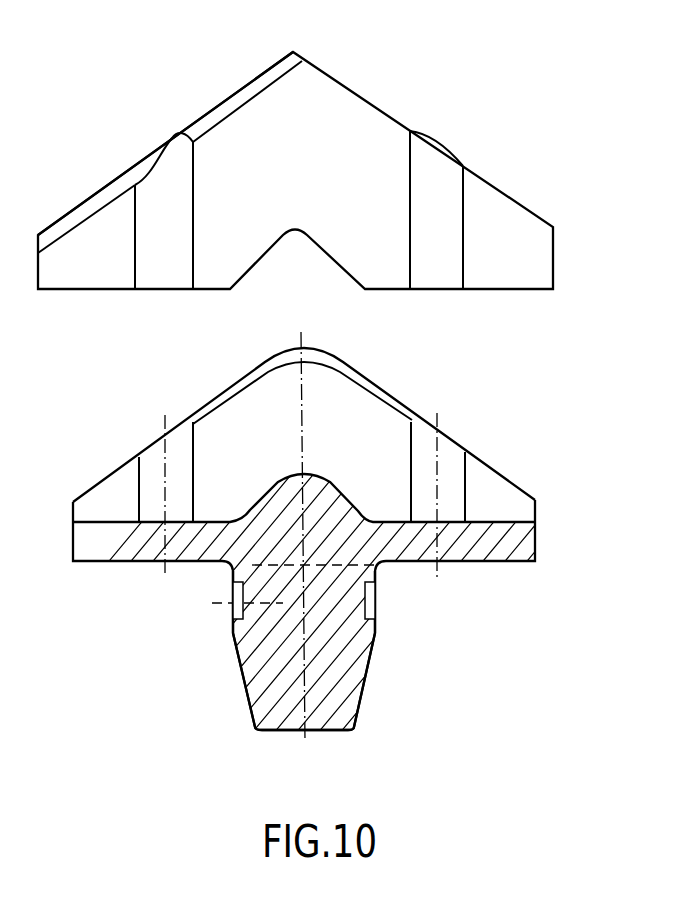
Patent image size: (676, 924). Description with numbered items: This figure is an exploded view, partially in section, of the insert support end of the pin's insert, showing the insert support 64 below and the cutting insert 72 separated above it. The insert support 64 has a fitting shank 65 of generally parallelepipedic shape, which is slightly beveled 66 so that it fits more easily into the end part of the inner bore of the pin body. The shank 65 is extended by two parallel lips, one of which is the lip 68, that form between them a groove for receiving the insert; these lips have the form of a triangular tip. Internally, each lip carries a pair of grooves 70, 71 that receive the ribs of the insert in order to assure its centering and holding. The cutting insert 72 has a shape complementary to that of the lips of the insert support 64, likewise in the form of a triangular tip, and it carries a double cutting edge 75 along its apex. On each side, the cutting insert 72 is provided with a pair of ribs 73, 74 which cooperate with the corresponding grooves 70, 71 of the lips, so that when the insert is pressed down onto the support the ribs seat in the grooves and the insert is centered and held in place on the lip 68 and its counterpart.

The insert support 64 is at (338, 537).
The fitting shank 65 is at (347, 595).
The bevel 66 is at (365, 697).
The lip 68 is at (495, 497).
The groove 70 is at (155, 462).
The groove 71 is at (450, 460).
The cutting insert 72 is at (333, 112).
The rib 73 is at (152, 258).
The rib 74 is at (443, 272).
The double cutting edge 75 is at (255, 85).